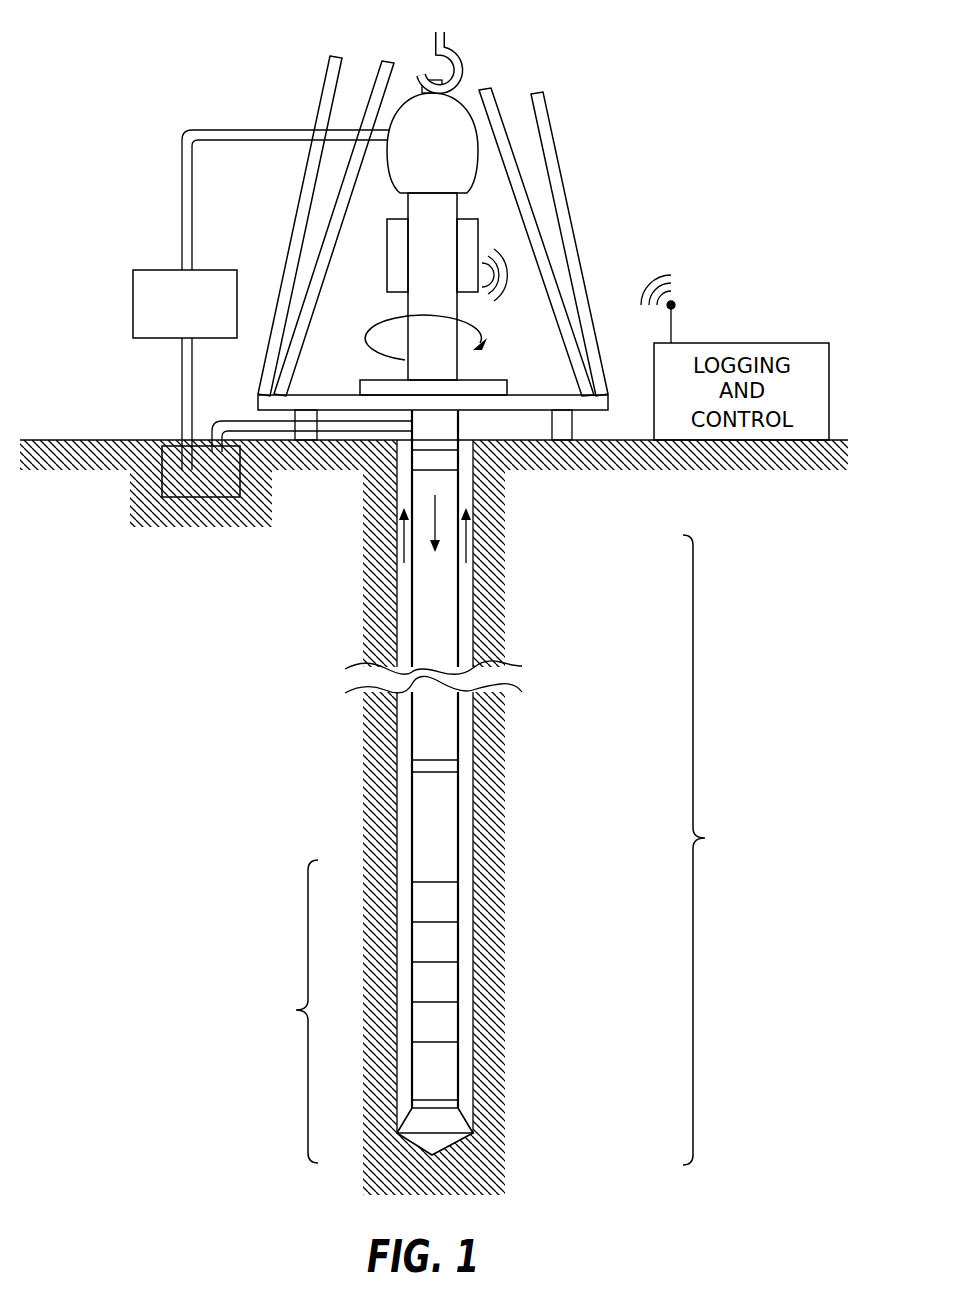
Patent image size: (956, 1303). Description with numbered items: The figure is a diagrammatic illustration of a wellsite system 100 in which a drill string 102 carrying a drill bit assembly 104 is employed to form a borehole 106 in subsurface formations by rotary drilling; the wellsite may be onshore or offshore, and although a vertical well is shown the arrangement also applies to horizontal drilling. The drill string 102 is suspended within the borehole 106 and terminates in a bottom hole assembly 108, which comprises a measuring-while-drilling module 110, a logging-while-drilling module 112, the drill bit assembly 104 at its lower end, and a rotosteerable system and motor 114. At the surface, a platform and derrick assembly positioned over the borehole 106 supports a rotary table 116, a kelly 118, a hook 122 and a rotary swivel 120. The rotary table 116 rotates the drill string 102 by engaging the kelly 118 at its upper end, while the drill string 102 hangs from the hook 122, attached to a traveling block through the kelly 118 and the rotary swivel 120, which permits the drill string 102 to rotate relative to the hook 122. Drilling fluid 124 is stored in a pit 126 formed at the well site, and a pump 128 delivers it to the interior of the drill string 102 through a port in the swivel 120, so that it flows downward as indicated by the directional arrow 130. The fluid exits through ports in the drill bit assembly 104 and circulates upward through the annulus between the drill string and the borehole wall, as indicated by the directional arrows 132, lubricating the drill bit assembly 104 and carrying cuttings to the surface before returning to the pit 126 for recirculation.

The wellsite system 100 is at (641, 120).
The drill string 102 is at (434, 817).
The drill bit assembly 104 is at (448, 1122).
The borehole 106 is at (452, 447).
The bottom hole assembly 108 is at (355, 1011).
The measuring-while-drilling (MWD) module 110 is at (448, 982).
The logging-while-drilling (LWD) module 112 is at (448, 942).
The rotosteerable system and motor 114 is at (448, 1070).
The rotary table 116 is at (487, 385).
The kelly 118 is at (405, 360).
The rotary swivel 120 is at (458, 100).
The hook 122 is at (428, 45).
The drilling fluid 124 is at (187, 497).
The pit 126 is at (167, 443).
The pump 128 is at (148, 270).
The directional arrow 130 is at (437, 557).
The directional arrows 132 is at (400, 540).